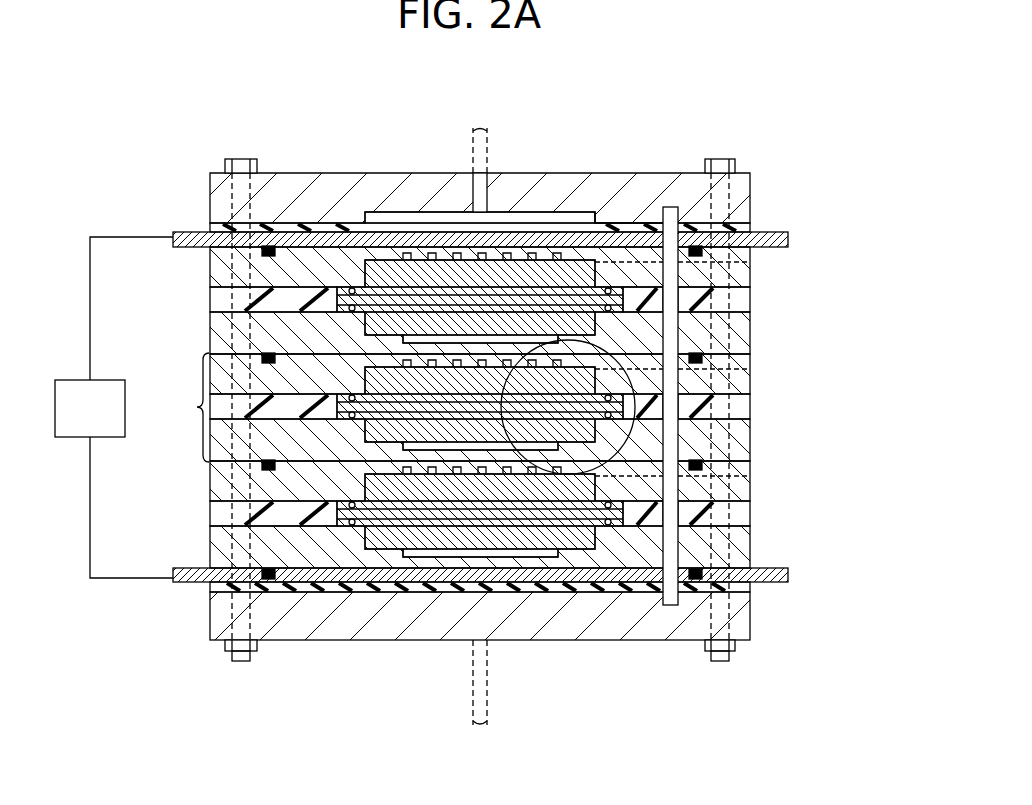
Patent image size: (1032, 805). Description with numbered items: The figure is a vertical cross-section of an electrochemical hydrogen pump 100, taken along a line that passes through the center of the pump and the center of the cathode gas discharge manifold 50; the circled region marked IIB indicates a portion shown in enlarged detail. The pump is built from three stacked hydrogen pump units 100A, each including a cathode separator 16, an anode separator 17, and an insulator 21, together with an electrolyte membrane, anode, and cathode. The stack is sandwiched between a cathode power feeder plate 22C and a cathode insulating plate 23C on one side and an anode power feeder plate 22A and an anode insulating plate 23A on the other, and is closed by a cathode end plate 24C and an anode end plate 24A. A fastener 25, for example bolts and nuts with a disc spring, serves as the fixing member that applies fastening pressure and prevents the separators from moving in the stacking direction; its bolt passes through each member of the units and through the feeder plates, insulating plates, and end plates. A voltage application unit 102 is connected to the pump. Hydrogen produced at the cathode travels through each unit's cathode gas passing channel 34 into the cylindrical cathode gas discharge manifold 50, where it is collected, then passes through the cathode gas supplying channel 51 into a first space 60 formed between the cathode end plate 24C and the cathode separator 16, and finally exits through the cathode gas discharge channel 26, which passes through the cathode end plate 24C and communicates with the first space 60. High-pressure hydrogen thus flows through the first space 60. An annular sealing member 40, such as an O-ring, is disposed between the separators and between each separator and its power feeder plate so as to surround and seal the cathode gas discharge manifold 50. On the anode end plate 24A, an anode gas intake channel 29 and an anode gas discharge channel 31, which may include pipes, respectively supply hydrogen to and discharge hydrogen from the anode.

The electrochemical hydrogen pump 100 is at (410, 77).
The hydrogen pump unit 100A is at (174, 407).
The voltage application unit 102 is at (112, 423).
The cathode separator 16 is at (745, 378).
The anode separator 17 is at (745, 440).
The insulator 21 is at (745, 412).
The anode power feeder plate 22A is at (790, 578).
The cathode power feeder plate 22C is at (790, 237).
The anode insulating plate 23A is at (753, 588).
The cathode insulating plate 23C is at (753, 228).
The anode end plate 24A is at (753, 610).
The cathode end plate 24C is at (753, 186).
The fastener 25 is at (241, 162).
The cathode gas discharge channel 26 is at (471, 158).
The anode gas intake channel 29 is at (539, 684).
The anode gas discharge channel 31 is at (482, 688).
The cathode gas passing channel 34 is at (703, 262).
The annular sealing member 40 is at (702, 352).
The cathode gas discharge manifold 50 is at (745, 512).
The cathode gas supplying channel 51 is at (638, 214).
The first space 60 is at (521, 214).
The detail section IIB is at (640, 368).